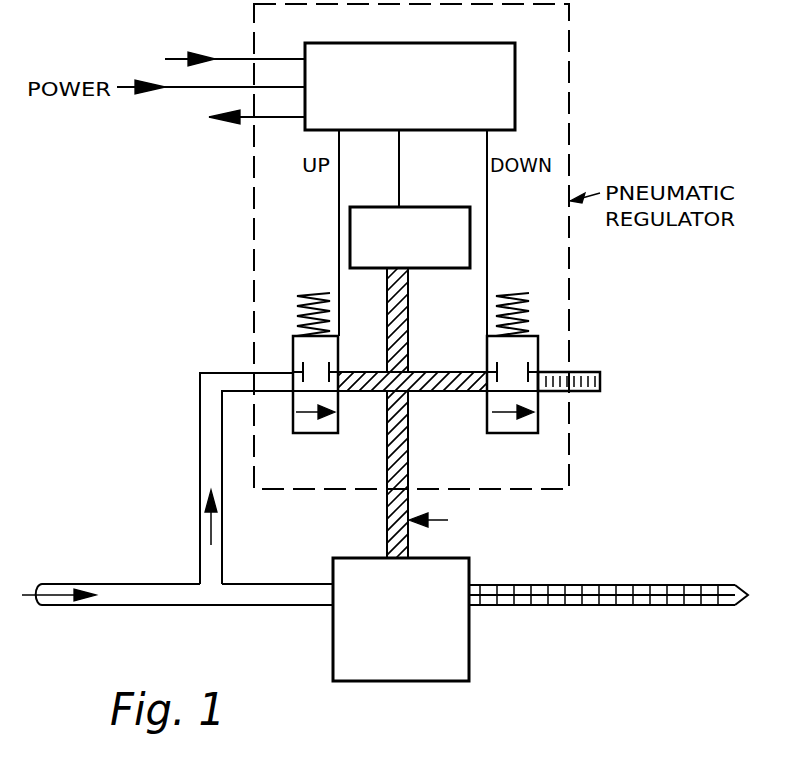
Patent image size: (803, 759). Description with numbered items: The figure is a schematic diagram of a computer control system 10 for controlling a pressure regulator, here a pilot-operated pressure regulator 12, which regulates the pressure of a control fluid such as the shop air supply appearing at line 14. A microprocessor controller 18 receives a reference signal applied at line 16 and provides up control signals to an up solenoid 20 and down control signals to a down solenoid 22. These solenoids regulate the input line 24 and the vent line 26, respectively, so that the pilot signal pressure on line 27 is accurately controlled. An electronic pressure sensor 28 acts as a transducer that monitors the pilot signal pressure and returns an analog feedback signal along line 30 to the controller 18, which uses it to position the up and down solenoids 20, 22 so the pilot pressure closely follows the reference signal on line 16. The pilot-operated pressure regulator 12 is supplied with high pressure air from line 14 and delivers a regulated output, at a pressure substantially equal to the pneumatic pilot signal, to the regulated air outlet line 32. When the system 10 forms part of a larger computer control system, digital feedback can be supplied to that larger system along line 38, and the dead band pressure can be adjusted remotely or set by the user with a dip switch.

The system 10 is at (570, 134).
The pilot-operated pressure regulator 12 is at (456, 681).
The shop air supply line 14 is at (280, 608).
The reference signal line 16 is at (228, 58).
The microprocessor controller 18 is at (458, 43).
The up solenoid 20 is at (290, 342).
The down solenoid 22 is at (538, 340).
The input line 24 is at (210, 373).
The vent line 26 is at (583, 393).
The pilot signal line 27 is at (387, 522).
The electronic pressure sensor 28 is at (424, 207).
The feedback signal line 30 is at (400, 168).
The regulated air outlet line 32 is at (600, 585).
The digital feedback line 38 is at (243, 120).